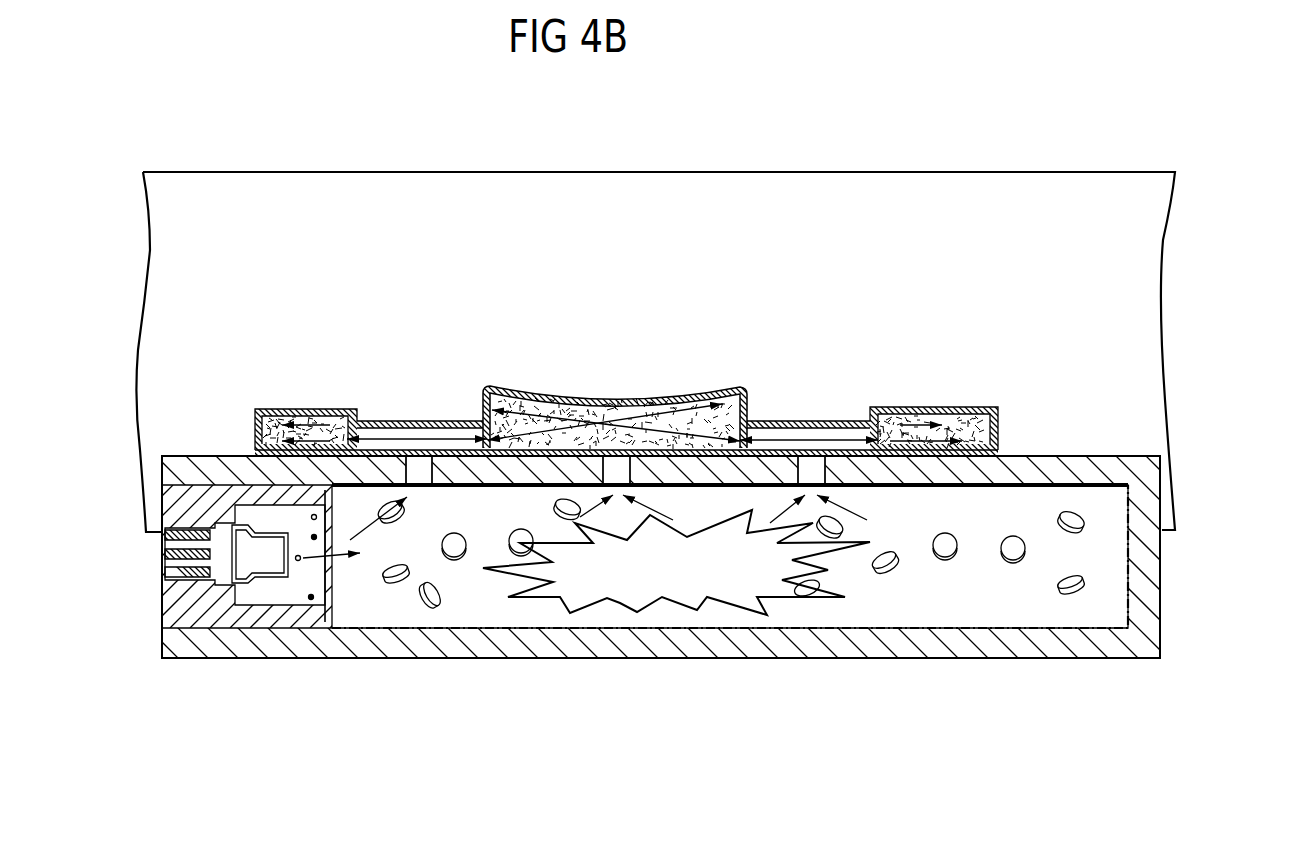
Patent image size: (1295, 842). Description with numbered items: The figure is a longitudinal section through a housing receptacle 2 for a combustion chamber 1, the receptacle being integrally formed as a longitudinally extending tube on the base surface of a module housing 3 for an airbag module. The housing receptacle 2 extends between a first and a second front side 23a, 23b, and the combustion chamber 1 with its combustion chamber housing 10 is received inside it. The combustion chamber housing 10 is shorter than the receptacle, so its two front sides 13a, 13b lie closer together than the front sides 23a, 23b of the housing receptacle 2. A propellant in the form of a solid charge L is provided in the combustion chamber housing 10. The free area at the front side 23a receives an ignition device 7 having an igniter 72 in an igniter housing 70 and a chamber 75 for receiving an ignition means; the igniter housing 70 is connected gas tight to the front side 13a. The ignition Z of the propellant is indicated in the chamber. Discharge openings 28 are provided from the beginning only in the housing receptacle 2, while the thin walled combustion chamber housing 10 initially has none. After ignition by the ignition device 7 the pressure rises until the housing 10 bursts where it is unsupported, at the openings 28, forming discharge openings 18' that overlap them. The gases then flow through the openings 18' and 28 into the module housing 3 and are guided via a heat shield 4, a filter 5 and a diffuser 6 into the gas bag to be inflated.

The combustion chamber 1 is at (947, 610).
The housing receptacle 2 is at (1163, 590).
The module housing 3 is at (1165, 242).
The heat shield 4 is at (512, 404).
The filter 5 is at (653, 400).
The diffuser 6 is at (580, 393).
The ignition device 7 is at (160, 604).
The combustion chamber housing 10 is at (1060, 485).
The first front side of the combustion chamber housing 13a is at (318, 624).
The second front side of the combustion chamber housing 13b is at (1128, 626).
The discharge openings 18' is at (637, 587).
The first front side of the housing receptacle 23a is at (226, 655).
The second front side of the housing receptacle 23b is at (1140, 645).
The discharge openings 28 is at (420, 462).
The igniter housing 70 is at (232, 654).
The igniter 72 is at (223, 557).
The chamber for receiving an ignition means 75 is at (280, 596).
The solid charge L is at (1067, 598).
The ignition Z is at (313, 537).